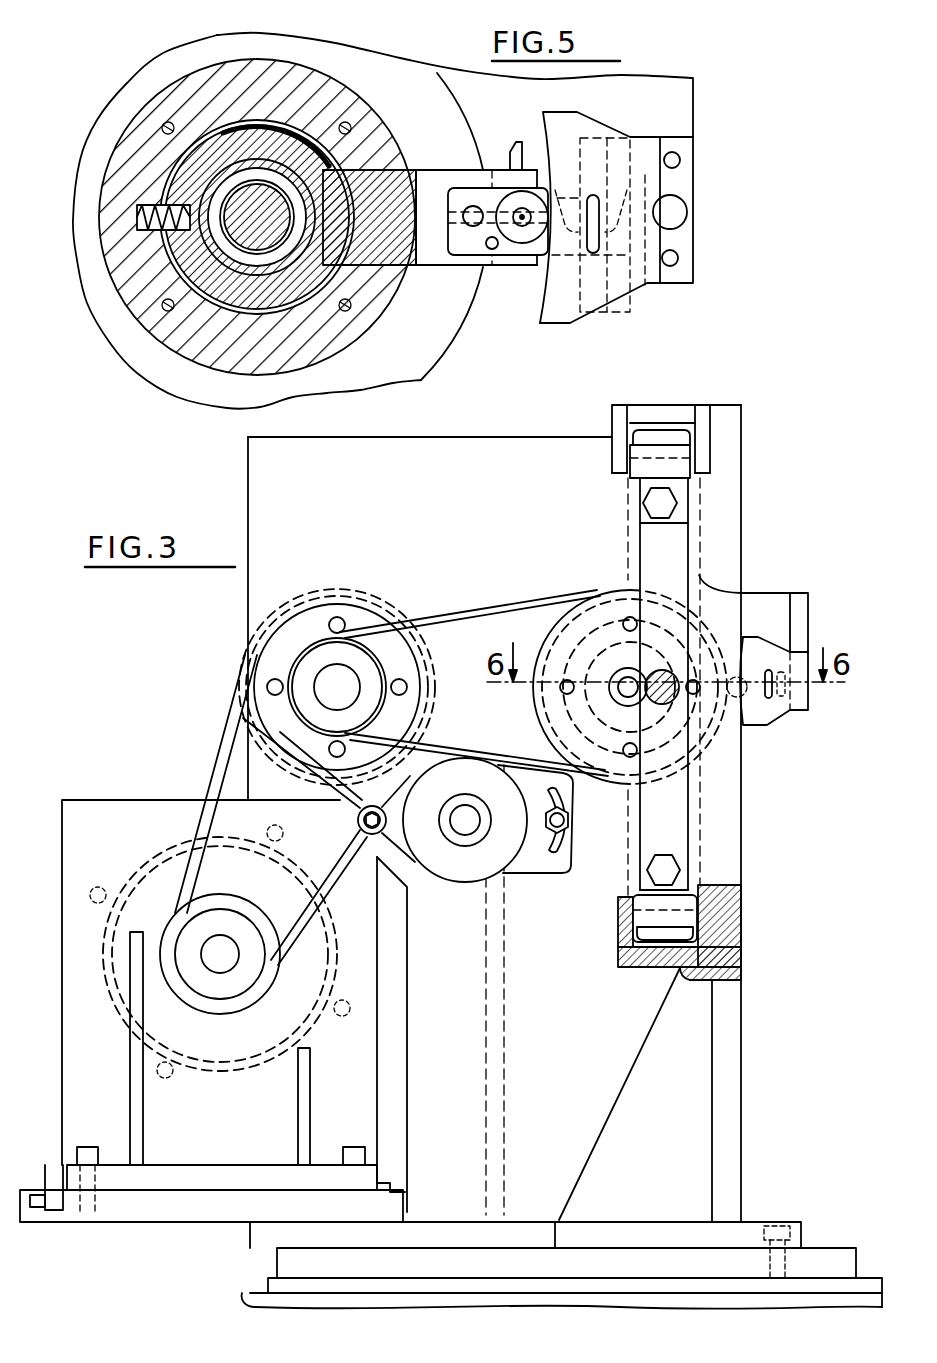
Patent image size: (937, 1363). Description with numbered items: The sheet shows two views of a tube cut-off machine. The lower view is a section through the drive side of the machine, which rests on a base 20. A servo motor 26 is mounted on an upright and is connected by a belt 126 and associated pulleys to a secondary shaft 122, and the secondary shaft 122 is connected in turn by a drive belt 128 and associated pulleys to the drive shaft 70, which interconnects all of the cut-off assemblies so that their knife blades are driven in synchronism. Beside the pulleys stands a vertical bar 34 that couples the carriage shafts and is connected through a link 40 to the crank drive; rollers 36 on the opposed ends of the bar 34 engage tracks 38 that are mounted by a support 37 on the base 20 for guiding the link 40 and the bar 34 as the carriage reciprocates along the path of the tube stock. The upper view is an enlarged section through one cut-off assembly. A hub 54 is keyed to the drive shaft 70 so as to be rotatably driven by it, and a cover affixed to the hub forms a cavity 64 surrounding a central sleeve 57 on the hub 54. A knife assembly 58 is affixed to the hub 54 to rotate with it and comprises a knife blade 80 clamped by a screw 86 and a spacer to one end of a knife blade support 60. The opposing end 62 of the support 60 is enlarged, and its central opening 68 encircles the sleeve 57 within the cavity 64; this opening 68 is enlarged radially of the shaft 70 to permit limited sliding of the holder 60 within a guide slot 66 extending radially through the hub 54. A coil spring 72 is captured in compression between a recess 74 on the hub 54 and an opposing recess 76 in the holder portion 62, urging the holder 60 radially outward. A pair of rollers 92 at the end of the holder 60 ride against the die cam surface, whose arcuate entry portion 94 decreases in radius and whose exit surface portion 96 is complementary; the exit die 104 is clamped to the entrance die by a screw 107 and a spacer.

In FIG. 3, the base 20 is at (812, 1257).
In FIG. 3, the servo motor 26 is at (141, 882).
In FIG. 3, the vertical bar 34 is at (672, 558).
In FIG. 3, the rollers 36 is at (678, 453).
In FIG. 3, the support 37 is at (732, 1106).
In FIG. 3, the tracks 38 is at (703, 430).
In FIG. 3, the link 40 is at (665, 695).
In FIG. 5, the hub 54 is at (137, 305).
In FIG. 5, the central sleeve 57 is at (267, 267).
In FIG. 5, the knife assembly 58 is at (453, 265).
In FIG. 5, the knife blade support 60 is at (410, 268).
In FIG. 5, the opposing end of support 62 is at (313, 157).
In FIG. 5, the cavity 64 is at (233, 133).
In FIG. 5, the guide slot 66 is at (368, 260).
In FIG. 5, the central opening 68 is at (240, 265).
In FIG. 3, the drive shaft 70 is at (607, 630).
In FIG. 5, the coil spring 72 is at (135, 224).
In FIG. 5, the recess 74 is at (140, 196).
In FIG. 5, the recess 76 is at (128, 272).
In FIG. 5, the knife blade 80 is at (622, 253).
In FIG. 5, the screw 86 is at (473, 206).
In FIG. 5, the rollers 92 is at (523, 240).
In FIG. 5, the arcuate entry portion 94 is at (540, 314).
In FIG. 5, the exit surface portion 96 is at (552, 119).
In FIG. 5, the exit die 104 is at (563, 312).
In FIG. 3, the exit die 104 is at (767, 718).
In FIG. 5, the screw 107 is at (670, 224).
In FIG. 3, the secondary shaft 122 is at (338, 672).
In FIG. 3, the belt 126 is at (210, 765).
In FIG. 3, the drive belt 128 is at (505, 615).